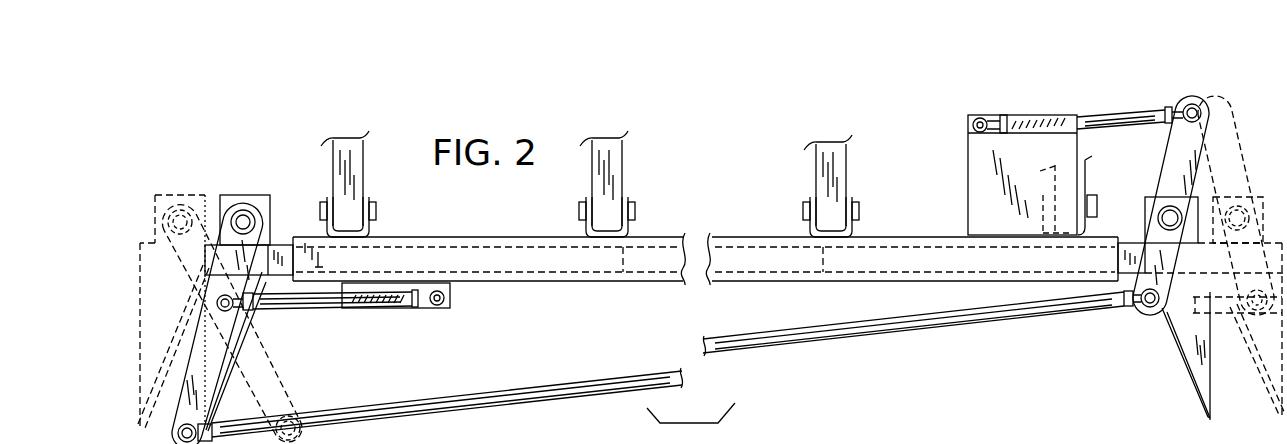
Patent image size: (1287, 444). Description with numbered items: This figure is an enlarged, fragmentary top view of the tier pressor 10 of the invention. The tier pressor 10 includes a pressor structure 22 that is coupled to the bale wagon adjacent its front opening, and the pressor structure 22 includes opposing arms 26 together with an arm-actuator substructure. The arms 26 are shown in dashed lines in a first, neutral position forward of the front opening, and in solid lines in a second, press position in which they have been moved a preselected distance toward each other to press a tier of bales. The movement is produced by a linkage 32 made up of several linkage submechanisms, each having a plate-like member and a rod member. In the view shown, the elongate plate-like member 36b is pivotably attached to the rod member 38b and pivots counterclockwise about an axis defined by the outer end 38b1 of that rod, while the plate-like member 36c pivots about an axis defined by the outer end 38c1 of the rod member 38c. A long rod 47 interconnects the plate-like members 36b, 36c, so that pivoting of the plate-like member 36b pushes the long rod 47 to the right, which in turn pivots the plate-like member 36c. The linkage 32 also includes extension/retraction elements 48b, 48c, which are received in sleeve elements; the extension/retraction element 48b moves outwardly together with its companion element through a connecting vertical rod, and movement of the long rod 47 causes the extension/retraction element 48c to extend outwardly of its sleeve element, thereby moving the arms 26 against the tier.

The tier pressor 10 is at (236, 176).
The pressor structure 22 is at (1223, 408).
The opposing arms 26 is at (246, 344).
The linkage 32 is at (1163, 101).
The plate-like member 36b is at (266, 215).
The plate-like member 36c is at (1174, 152).
The rod member 38b is at (343, 312).
The outer end of rod 38b1 is at (231, 312).
The rod member 38c is at (1110, 110).
The outer end of rod 38c1 is at (1194, 100).
The long rod 47 is at (898, 337).
The extension/retraction element 48b is at (278, 243).
The extension/retraction element 48c is at (1133, 242).